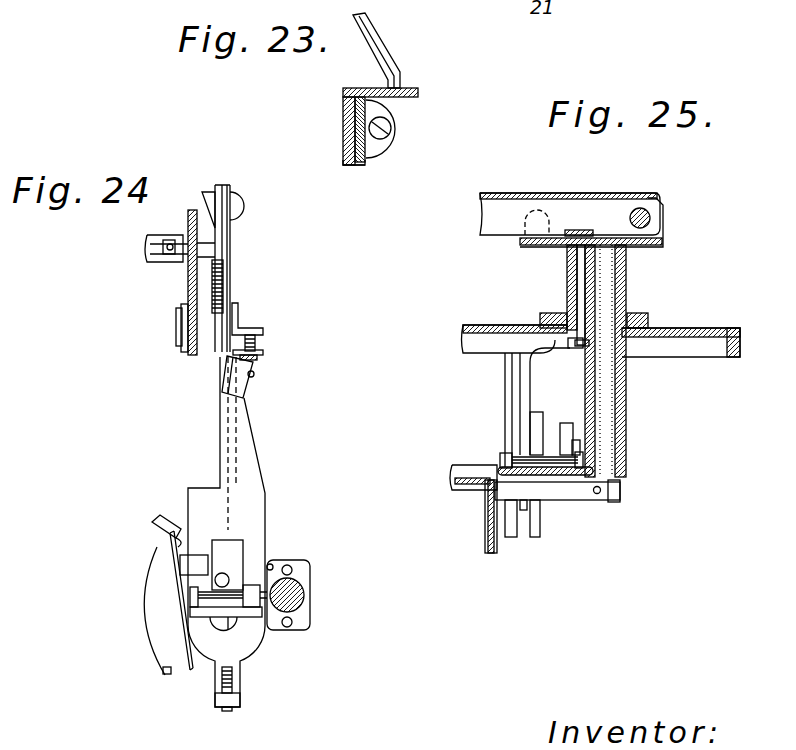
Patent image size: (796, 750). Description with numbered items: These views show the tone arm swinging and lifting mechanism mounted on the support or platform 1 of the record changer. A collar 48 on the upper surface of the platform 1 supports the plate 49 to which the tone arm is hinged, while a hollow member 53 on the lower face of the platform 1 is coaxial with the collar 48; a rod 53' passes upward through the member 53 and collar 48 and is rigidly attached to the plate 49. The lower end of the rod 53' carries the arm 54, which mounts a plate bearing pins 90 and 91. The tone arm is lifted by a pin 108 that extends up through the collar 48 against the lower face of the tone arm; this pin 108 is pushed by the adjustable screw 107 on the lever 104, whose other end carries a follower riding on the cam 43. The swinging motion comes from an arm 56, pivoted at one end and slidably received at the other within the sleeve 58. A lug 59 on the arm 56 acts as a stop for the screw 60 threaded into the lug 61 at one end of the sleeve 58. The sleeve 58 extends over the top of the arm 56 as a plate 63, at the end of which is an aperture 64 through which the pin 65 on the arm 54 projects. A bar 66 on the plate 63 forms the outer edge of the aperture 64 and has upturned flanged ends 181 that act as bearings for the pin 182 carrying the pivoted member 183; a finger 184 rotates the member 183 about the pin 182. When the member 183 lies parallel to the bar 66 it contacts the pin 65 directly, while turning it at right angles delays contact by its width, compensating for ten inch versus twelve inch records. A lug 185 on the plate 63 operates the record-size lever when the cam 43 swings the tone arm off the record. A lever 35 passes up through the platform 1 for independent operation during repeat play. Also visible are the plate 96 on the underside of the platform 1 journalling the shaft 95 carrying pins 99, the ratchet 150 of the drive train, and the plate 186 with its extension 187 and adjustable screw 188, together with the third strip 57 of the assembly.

In FIG. 25, the support or platform 1 is at (718, 328).
In FIG. 24, the lever 35 is at (165, 660).
In FIG. 25, the lever 35 is at (490, 553).
In FIG. 24, the cam 43 is at (223, 290).
In FIG. 25, the cam 43 is at (533, 537).
In FIG. 25, the collar 48 is at (627, 288).
In FIG. 25, the plate 49 is at (665, 240).
In FIG. 24, the hollow member 53 is at (310, 595).
In FIG. 25, the hollow member 53 is at (646, 361).
In FIG. 24, the rod 53' is at (313, 595).
In FIG. 25, the rod 53' is at (641, 361).
In FIG. 24, the arm 54 is at (245, 585).
In FIG. 25, the arm 54 is at (587, 495).
In FIG. 24, the arm 56 is at (218, 255).
In FIG. 24, the strip 57 is at (228, 190).
In FIG. 23, the sleeve 58 is at (370, 166).
In FIG. 24, the lug 59 is at (262, 327).
In FIG. 23, the screw 60 is at (385, 150).
In FIG. 24, the screw 60 is at (250, 360).
In FIG. 23, the lug 61 is at (390, 133).
In FIG. 24, the lug 61 is at (262, 347).
In FIG. 23, the plate 63 is at (418, 91).
In FIG. 24, the plate 63 is at (250, 440).
In FIG. 24, the aperture 64 is at (235, 565).
In FIG. 24, the pin 65 is at (226, 580).
In FIG. 24, the bar 66 is at (228, 617).
In FIG. 24, the pin 90 is at (163, 675).
In FIG. 24, the pin 91 is at (157, 525).
In FIG. 24, the shaft 95 is at (190, 240).
In FIG. 24, the plate 96 is at (192, 212).
In FIG. 25, the plate 96 is at (505, 395).
In FIG. 24, the pins 99 is at (162, 240).
In FIG. 25, the lever 104 is at (523, 353).
In FIG. 25, the adjustable screw 107 is at (523, 327).
In FIG. 25, the pin 108 is at (577, 333).
In FIG. 25, the ratchet 150 is at (602, 193).
In FIG. 24, the upwardly turned flanged ends 181 is at (200, 612).
In FIG. 25, the upwardly turned flanged ends 181 is at (502, 463).
In FIG. 24, the pin 182 is at (240, 630).
In FIG. 25, the pin 182 is at (553, 460).
In FIG. 24, the member 183 is at (200, 592).
In FIG. 25, the member 183 is at (520, 450).
In FIG. 24, the finger 184 is at (262, 570).
In FIG. 25, the finger 184 is at (565, 423).
In FIG. 23, the lug 185 is at (400, 58).
In FIG. 24, the lug 185 is at (246, 378).
In FIG. 24, the plate 186 is at (240, 690).
In FIG. 24, the extension 187 is at (238, 700).
In FIG. 24, the adjustable screw 188 is at (215, 706).